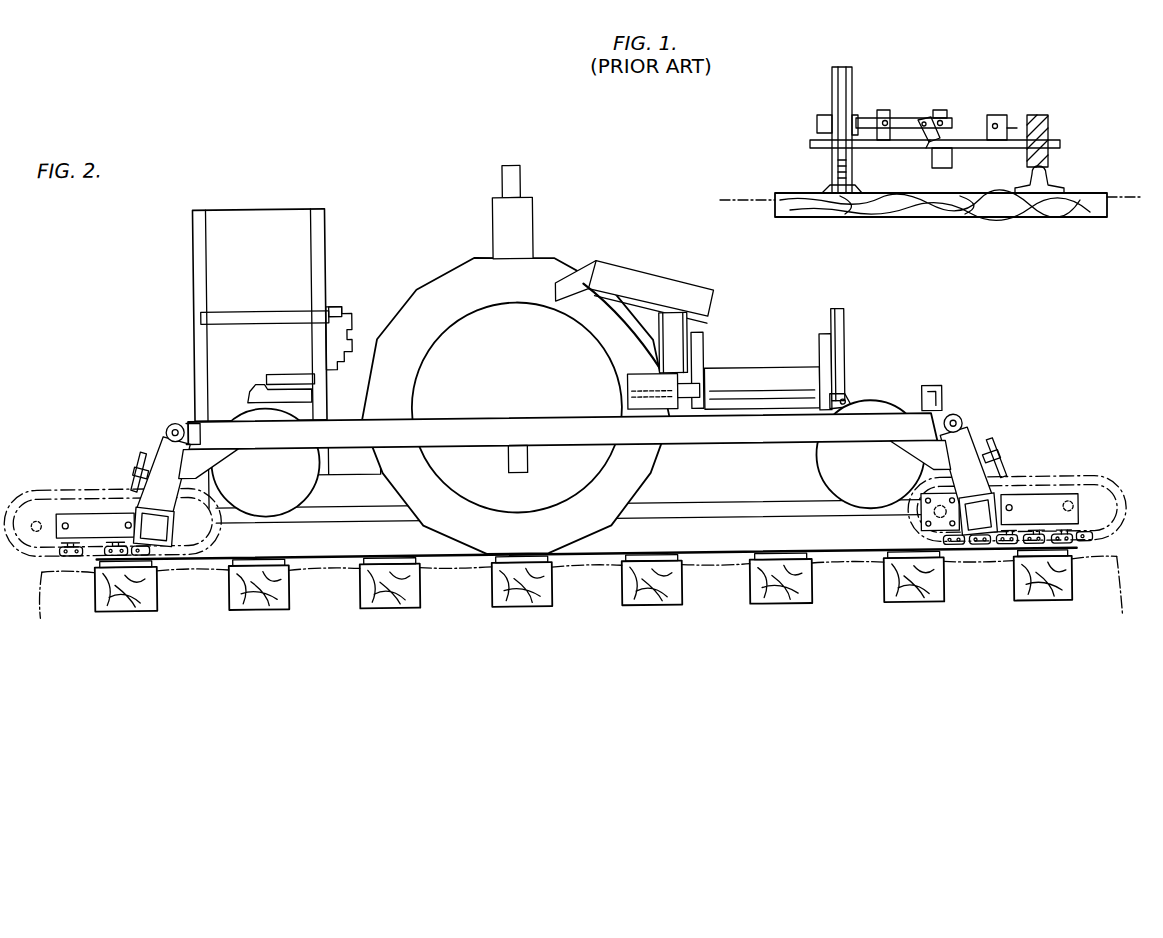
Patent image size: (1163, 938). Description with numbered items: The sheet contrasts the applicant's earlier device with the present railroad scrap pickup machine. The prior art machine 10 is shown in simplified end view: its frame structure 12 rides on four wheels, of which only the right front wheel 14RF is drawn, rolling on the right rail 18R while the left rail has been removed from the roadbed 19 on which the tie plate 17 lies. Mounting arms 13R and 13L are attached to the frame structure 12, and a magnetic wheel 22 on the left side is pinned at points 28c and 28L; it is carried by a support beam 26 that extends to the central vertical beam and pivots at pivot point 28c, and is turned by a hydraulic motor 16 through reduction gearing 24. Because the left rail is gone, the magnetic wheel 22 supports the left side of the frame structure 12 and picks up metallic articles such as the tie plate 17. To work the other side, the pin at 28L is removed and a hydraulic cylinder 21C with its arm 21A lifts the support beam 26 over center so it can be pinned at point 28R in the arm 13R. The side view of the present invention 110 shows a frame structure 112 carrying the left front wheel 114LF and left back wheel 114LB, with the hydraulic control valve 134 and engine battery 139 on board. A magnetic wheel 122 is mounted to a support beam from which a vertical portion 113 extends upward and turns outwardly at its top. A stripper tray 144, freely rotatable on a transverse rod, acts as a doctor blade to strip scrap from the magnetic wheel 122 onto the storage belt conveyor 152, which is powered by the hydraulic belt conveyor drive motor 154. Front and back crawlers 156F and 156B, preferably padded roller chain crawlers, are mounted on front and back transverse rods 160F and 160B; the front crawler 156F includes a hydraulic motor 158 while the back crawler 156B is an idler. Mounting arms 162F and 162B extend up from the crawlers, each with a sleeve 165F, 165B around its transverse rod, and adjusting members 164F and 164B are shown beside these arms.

In FIG. 1, the prior art machine 10 is at (1054, 60).
In FIG. 1, the frame structure 12 is at (962, 150).
In FIG. 1, the mounting arm 13L is at (883, 110).
In FIG. 1, the mounting arm 13R is at (995, 115).
In FIG. 1, the right front wheel 14RF is at (1050, 120).
In FIG. 1, the hydraulic motor 16 is at (856, 114).
In FIG. 1, the tie plate 17 is at (860, 185).
In FIG. 1, the right rail 18R is at (1050, 180).
In FIG. 1, the roadbed 19 is at (900, 217).
In FIG. 2, the roadbed 19 is at (689, 554).
In FIG. 1, the arm 21A is at (926, 140).
In FIG. 1, the hydraulic cylinder 21C is at (947, 168).
In FIG. 1, the magnetic wheel 22 is at (850, 80).
In FIG. 1, the reduction gearing 24 is at (818, 117).
In FIG. 1, the support beam 26 is at (907, 118).
In FIG. 1, the pin point 28L is at (888, 120).
In FIG. 1, the pivot point 28c is at (941, 117).
In FIG. 1, the pin point 28R is at (1006, 126).
In FIG. 2, the railroad scrap pickup machine 110 is at (806, 288).
In FIG. 2, the frame structure 112 is at (749, 447).
In FIG. 2, the vertical portion 113 is at (525, 218).
In FIG. 2, the left back wheel 114LB is at (298, 489).
In FIG. 2, the left front wheel 114LF is at (879, 405).
In FIG. 2, the magnetic wheel 122 is at (472, 261).
In FIG. 2, the hydraulic control valve 134 is at (354, 328).
In FIG. 2, the engine battery 139 is at (252, 384).
In FIG. 2, the stripper tray 144 is at (673, 286).
In FIG. 2, the storage belt conveyor 152 is at (771, 372).
In FIG. 2, the hydraulic belt conveyor drive motor 154 is at (646, 379).
In FIG. 2, the back crawler 156B is at (85, 510).
In FIG. 2, the front crawler 156F is at (1044, 500).
In FIG. 2, the hydraulic motor 158 is at (921, 517).
In FIG. 2, the back transverse rod 160B is at (178, 421).
In FIG. 2, the front transverse rod 160F is at (960, 416).
In FIG. 2, the mounting arm 162B is at (160, 430).
In FIG. 2, the mounting arm 162F is at (970, 434).
In FIG. 2, the back adjusting bolt 164B is at (141, 454).
In FIG. 2, the front adjusting bolt 164F is at (1001, 446).
In FIG. 2, the sleeve 165B is at (166, 421).
In FIG. 2, the sleeve 165F is at (965, 424).